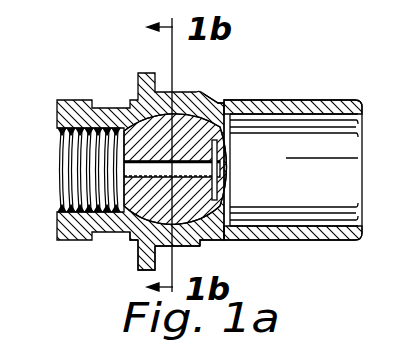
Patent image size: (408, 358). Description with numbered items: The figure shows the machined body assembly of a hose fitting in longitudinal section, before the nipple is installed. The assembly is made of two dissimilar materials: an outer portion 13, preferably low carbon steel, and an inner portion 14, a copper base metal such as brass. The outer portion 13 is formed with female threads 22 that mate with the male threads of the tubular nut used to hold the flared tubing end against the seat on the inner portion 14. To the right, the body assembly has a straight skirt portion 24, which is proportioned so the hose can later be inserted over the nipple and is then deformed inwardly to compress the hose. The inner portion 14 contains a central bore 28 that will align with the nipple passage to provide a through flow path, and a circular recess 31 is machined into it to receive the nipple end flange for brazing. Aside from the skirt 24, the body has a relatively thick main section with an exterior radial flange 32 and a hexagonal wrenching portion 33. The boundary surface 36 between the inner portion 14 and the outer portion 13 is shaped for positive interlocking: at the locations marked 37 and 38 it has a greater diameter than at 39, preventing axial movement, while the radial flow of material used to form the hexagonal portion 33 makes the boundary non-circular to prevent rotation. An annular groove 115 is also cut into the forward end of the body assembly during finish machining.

The outer portion 13 is at (225, 241).
The inner portion 14 is at (231, 219).
The female threads 22 is at (60, 142).
The skirt portion 24 is at (328, 100).
The central bore 28 is at (213, 165).
The circular recess 31 is at (230, 182).
The exterior radial flange 32 is at (138, 262).
The hexagonal wrenching portion 33 is at (183, 248).
The boundary surface 36 is at (130, 226).
The larger diameter boundary region 37 is at (177, 114).
The larger diameter boundary region 38 is at (237, 101).
The smaller diameter boundary region 39 is at (214, 104).
The annular groove 115 is at (107, 108).